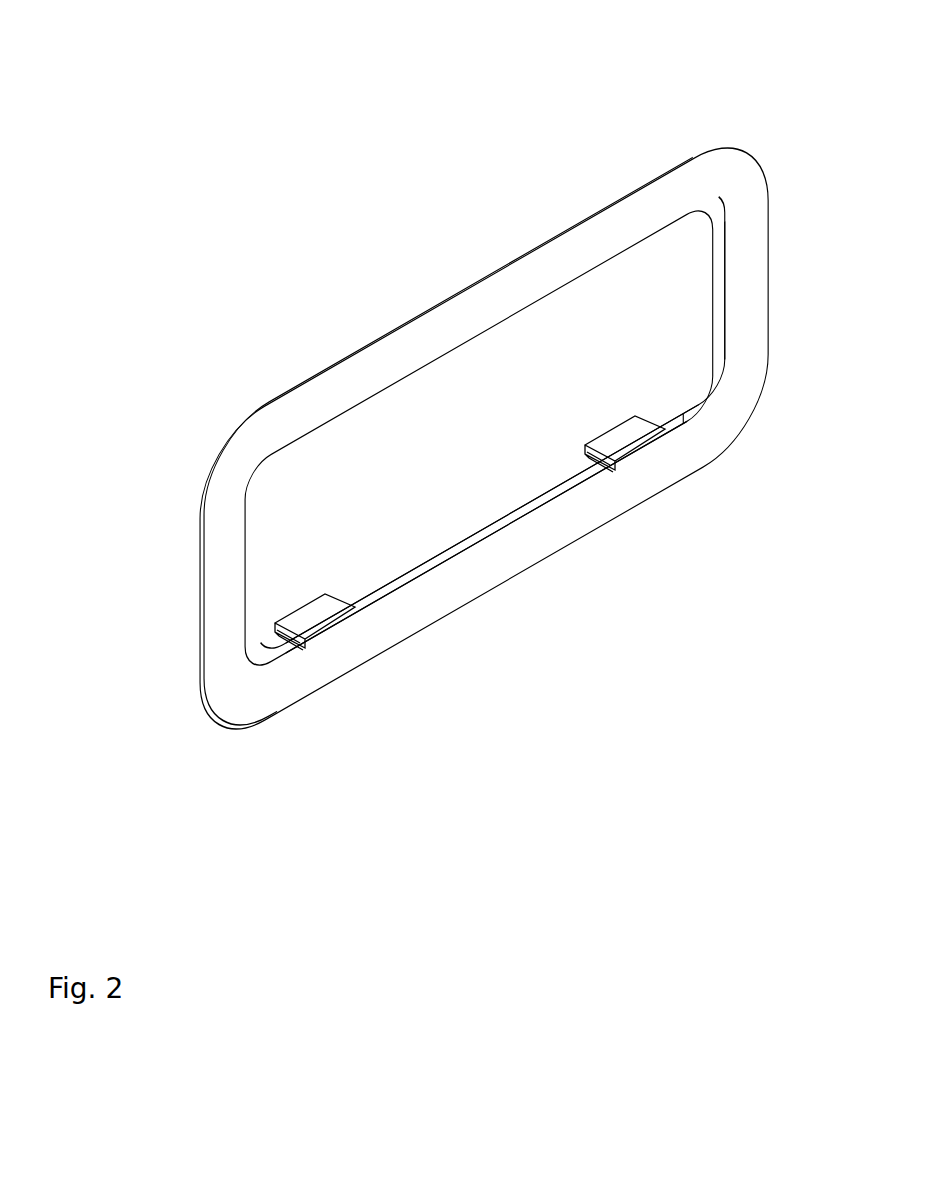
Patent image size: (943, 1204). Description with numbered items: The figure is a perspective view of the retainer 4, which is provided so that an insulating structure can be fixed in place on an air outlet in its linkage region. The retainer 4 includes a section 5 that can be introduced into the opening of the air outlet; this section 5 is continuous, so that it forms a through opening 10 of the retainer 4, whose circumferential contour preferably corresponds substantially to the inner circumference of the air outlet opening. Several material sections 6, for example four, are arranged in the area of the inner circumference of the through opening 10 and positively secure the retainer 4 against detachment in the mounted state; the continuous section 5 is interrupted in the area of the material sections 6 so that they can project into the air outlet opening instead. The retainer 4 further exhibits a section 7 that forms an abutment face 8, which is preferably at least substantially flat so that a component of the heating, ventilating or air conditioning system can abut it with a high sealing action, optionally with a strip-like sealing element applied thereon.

The retainer 4 is at (278, 343).
The section 5 is at (718, 318).
The material sections 6 is at (643, 240).
The section 7 is at (350, 378).
The abutment face 8 is at (458, 322).
The through opening 10 is at (477, 455).